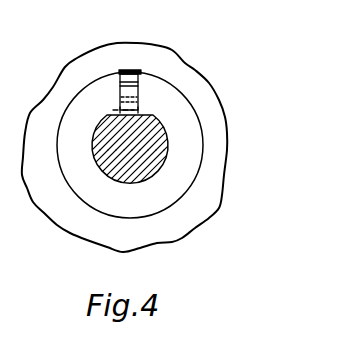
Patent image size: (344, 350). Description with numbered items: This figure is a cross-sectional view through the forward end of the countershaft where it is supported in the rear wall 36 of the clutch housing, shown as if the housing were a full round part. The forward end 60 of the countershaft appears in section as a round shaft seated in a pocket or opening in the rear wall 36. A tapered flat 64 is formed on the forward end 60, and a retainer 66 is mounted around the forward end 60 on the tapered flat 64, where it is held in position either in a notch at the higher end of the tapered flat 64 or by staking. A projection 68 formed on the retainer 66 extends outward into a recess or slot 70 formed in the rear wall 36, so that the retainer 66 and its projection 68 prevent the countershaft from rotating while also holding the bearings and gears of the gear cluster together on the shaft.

The rear wall 36 is at (70, 75).
The forward end 60 is at (135, 165).
The tapered flat 64 is at (135, 112).
The retainer 66 is at (187, 146).
The projection 68 is at (138, 90).
The recess or slot 70 is at (135, 70).